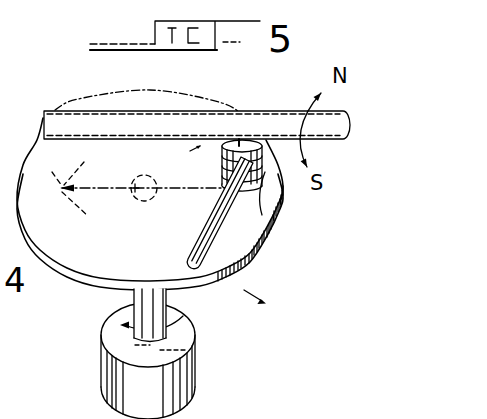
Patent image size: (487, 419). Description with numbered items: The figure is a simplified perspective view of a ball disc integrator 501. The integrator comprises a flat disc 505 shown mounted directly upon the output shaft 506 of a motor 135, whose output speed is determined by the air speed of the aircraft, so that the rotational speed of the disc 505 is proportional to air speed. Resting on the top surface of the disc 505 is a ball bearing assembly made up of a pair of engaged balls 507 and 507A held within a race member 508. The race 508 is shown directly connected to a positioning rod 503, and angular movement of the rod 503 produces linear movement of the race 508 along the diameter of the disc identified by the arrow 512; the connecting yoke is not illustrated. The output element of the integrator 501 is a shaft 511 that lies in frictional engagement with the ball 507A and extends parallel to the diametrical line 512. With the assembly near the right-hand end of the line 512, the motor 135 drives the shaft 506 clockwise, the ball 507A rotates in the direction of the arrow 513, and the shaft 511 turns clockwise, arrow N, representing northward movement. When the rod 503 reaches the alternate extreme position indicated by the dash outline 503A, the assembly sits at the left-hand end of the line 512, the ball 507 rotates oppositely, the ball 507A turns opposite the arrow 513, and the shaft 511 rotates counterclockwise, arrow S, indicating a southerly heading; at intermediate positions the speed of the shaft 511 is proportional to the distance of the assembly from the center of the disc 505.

The motor 135 is at (186, 382).
The ball disc integrator 501 is at (288, 313).
The positioning rod 503 is at (225, 212).
The alternate extreme position of positioning rod 503A is at (104, 180).
The flat disc 505 is at (190, 283).
The output shaft 506 is at (112, 315).
The ball 507 is at (277, 222).
The ball 507A is at (184, 157).
The race member 508 is at (263, 150).
The shaft 511 is at (68, 122).
The arrow 512 is at (108, 188).
The arrow 513 is at (240, 146).